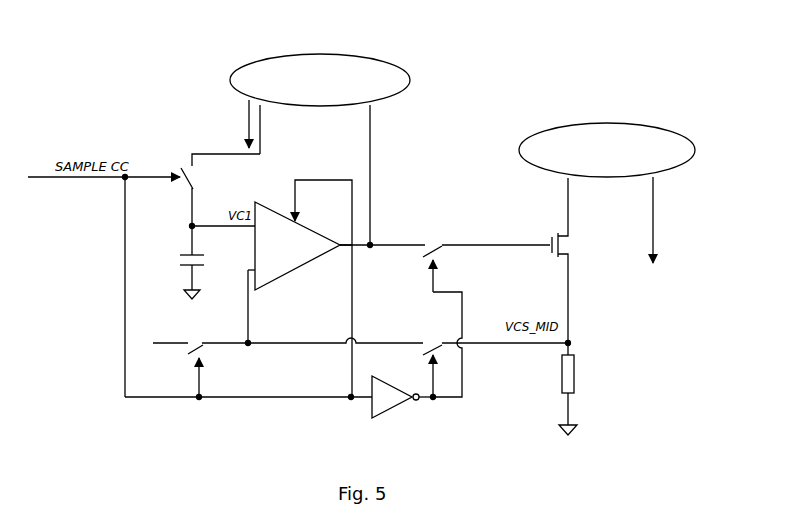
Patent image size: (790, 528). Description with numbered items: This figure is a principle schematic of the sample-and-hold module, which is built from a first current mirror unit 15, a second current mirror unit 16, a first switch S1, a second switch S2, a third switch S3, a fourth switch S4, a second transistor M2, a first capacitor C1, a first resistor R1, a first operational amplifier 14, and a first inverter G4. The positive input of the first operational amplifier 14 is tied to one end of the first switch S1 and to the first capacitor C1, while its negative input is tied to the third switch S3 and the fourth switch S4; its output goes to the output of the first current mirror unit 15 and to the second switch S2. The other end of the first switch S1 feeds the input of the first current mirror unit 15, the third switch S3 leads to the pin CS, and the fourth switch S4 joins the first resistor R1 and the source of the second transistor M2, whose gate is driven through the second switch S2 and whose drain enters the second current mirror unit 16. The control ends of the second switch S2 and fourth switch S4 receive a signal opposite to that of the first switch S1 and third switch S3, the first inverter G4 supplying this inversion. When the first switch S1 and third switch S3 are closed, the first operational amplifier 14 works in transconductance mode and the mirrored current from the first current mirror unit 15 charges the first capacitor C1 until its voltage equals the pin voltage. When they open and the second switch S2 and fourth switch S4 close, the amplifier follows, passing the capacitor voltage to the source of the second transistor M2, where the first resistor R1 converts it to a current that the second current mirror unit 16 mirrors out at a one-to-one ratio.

The first operational amplifier 14 is at (300, 288).
The first current mirror unit 15 is at (312, 149).
The second current mirror unit 16 is at (607, 193).
The first switch S1 is at (220, 190).
The second switch S2 is at (486, 311).
The third switch S3 is at (288, 361).
The fourth switch S4 is at (495, 360).
The first capacitor C1 is at (207, 262).
The second transistor M2 is at (551, 260).
The first resistor R1 is at (555, 389).
The first inverter G4 is at (402, 394).